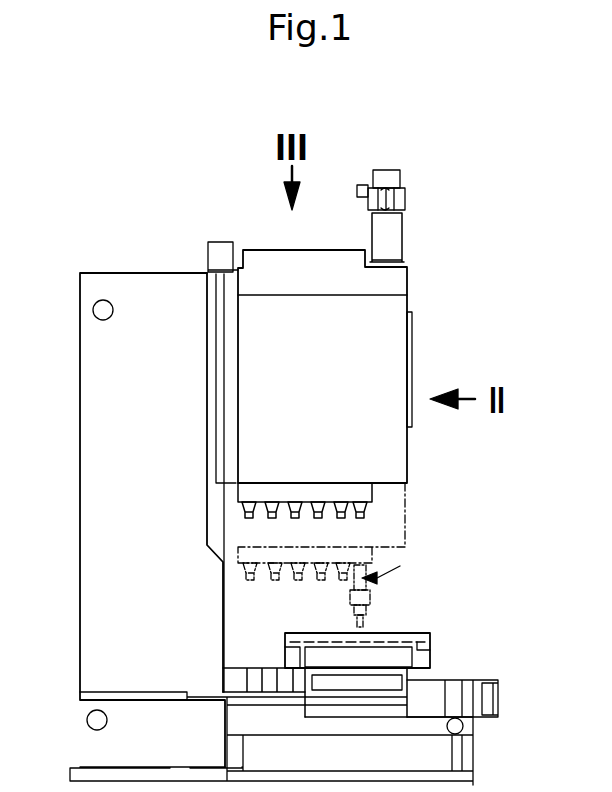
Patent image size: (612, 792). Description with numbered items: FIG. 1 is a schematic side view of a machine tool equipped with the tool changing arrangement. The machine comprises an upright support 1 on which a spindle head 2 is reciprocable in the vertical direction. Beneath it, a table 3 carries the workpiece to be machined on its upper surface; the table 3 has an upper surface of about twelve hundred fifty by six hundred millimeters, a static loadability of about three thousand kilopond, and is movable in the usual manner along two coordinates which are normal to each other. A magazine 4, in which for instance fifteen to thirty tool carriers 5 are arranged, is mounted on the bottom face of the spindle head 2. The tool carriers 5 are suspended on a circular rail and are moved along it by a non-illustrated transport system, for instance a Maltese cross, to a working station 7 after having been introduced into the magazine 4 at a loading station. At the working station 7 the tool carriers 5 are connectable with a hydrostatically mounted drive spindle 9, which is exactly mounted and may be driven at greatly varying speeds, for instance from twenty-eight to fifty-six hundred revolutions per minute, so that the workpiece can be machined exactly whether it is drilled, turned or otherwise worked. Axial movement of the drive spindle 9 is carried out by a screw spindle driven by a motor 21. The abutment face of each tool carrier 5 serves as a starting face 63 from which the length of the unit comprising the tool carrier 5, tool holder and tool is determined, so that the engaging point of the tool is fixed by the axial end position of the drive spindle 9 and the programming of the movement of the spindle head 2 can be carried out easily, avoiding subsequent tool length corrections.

The upright support 1 is at (112, 358).
The spindle head 2 is at (383, 355).
The motor 21 is at (392, 232).
The table 3 is at (432, 650).
The magazine 4 is at (367, 492).
The tool carrier 5 is at (285, 502).
The working station 7 is at (378, 578).
The drive spindle 9 is at (375, 602).
The starting face 63 is at (363, 598).